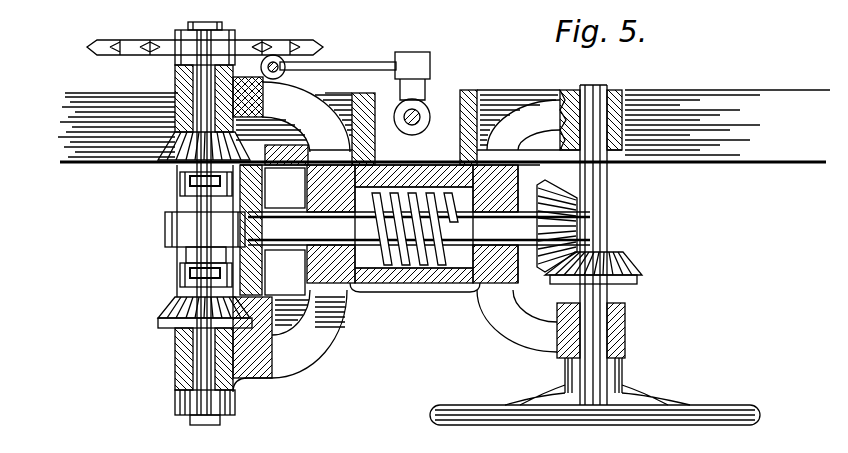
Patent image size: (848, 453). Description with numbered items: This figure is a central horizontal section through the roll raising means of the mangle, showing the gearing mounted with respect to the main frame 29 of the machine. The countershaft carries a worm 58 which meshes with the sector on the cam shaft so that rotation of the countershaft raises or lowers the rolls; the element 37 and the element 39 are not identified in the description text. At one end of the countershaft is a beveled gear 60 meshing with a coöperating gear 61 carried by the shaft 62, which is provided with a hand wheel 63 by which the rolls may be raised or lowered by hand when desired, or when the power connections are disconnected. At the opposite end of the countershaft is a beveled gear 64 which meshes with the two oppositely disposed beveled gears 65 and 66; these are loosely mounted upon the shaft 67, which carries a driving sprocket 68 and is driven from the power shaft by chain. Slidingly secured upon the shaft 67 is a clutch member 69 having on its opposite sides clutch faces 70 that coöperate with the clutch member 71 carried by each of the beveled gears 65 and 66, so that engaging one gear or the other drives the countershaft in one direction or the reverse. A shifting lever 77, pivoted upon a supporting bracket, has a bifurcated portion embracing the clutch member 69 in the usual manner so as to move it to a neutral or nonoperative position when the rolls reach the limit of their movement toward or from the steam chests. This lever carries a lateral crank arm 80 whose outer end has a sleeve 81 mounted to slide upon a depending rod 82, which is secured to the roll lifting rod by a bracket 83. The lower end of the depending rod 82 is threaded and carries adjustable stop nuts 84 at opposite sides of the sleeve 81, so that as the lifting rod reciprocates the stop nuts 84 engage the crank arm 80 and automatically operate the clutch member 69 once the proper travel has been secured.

The main frame 29 is at (445, 126).
The pivot hub 37 is at (404, 118).
The worm shaft 39 is at (419, 228).
The worm 58 is at (437, 265).
The beveled gear 60 is at (585, 192).
The coöperating gear 61 is at (633, 268).
The shaft 62 is at (608, 212).
The hand wheel 63 is at (711, 408).
The beveled gear 64 is at (285, 231).
The beveled gear 65 is at (185, 181).
The beveled gear 66 is at (153, 313).
The shaft 67 is at (202, 352).
The driving sprocket 68 is at (118, 109).
The clutch member 69 is at (168, 217).
The clutch faces 70 is at (181, 203).
The clutch member 71 is at (182, 184).
The shifting lever 77 is at (168, 236).
The lateral crank arm 80 is at (293, 117).
The sleeve 81 is at (285, 60).
The depending rod 82 is at (338, 54).
The bracket 83 is at (430, 90).
The adjustable stop nuts 84 is at (276, 40).